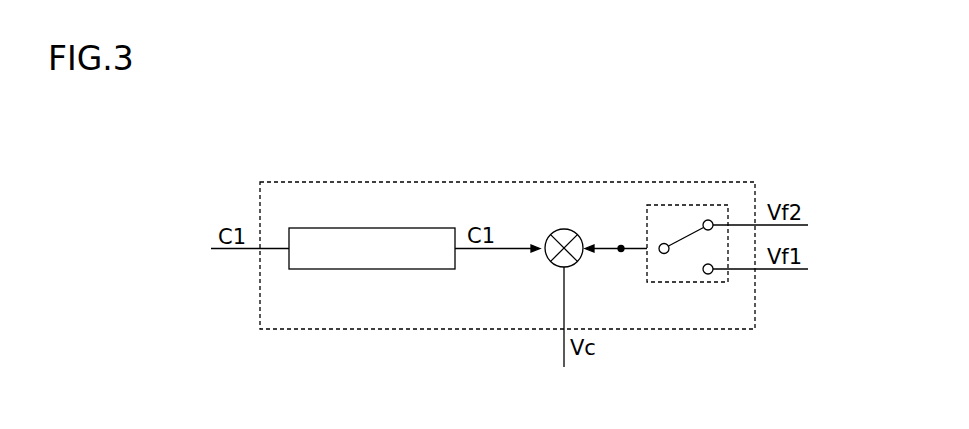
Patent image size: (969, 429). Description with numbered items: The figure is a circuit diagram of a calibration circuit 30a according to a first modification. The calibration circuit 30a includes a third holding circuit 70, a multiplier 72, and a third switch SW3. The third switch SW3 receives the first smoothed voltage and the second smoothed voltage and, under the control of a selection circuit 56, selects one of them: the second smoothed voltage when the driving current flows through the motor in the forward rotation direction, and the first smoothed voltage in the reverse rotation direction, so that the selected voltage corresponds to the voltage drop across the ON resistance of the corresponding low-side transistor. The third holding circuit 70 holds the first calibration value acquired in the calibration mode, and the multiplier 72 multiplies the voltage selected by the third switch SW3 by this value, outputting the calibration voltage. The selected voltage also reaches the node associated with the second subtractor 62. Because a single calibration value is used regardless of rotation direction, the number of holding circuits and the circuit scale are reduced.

The calibration circuit 30a is at (712, 329).
The third holding circuit 70 is at (420, 228).
The multiplier 72 is at (570, 232).
The second subtractor 62 is at (621, 248).
The selection circuit 56 is at (688, 204).
The third switch SW3 is at (673, 282).